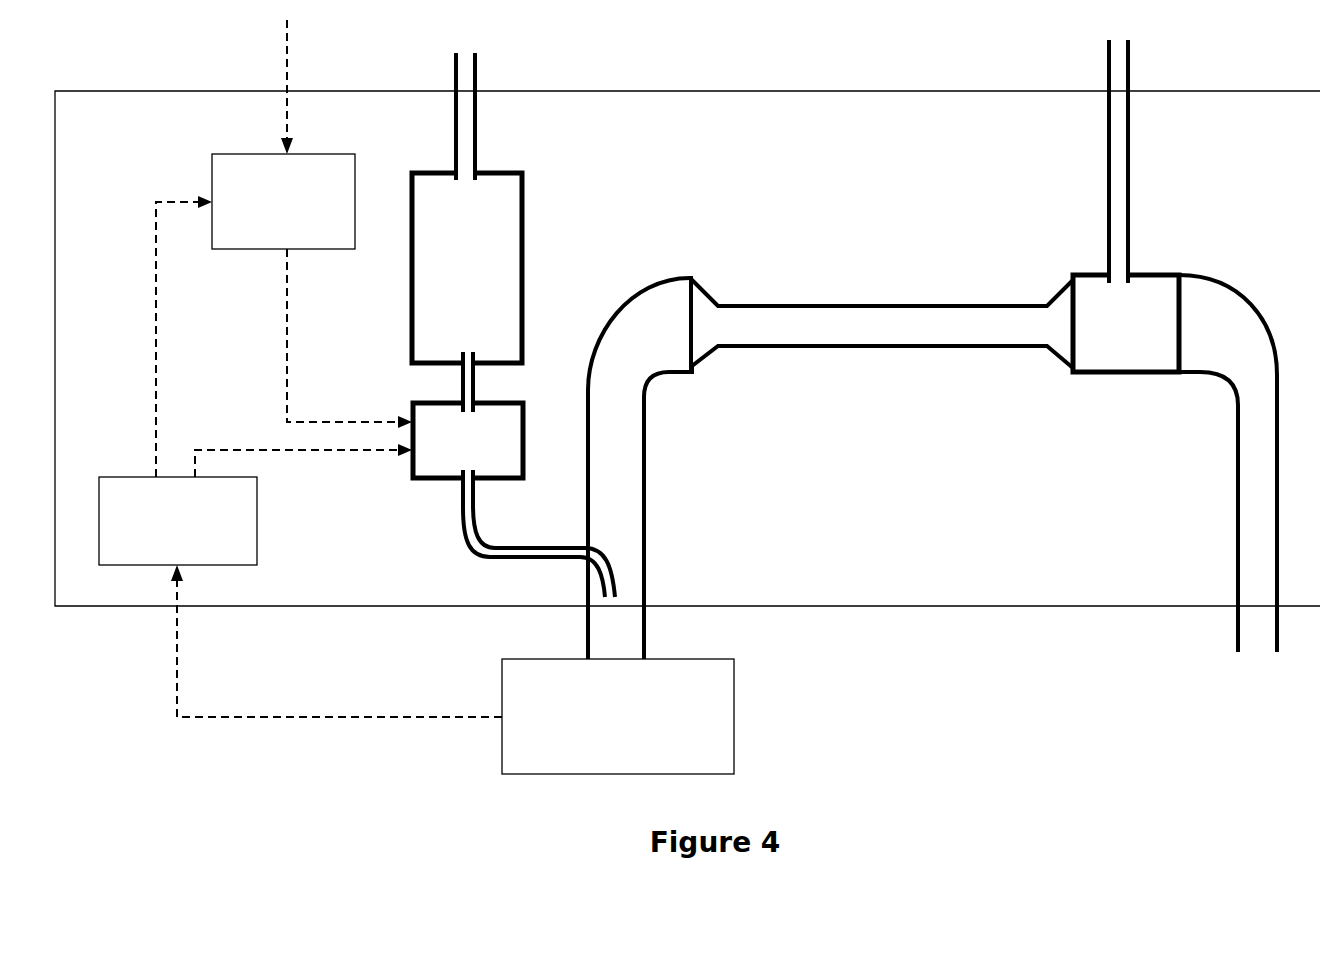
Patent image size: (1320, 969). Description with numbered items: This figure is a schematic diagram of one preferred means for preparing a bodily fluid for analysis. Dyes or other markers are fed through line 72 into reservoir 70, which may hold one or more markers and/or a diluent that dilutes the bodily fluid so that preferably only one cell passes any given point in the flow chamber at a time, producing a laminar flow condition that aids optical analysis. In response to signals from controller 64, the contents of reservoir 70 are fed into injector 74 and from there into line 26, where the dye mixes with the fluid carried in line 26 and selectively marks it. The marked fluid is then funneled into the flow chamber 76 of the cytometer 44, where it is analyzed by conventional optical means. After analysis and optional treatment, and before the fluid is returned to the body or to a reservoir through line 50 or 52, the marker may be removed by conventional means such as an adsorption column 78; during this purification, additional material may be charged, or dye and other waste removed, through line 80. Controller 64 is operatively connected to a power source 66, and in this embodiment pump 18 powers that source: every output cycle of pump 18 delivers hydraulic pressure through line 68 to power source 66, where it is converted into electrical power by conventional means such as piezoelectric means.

The pump 18 is at (734, 682).
The line 26 is at (645, 530).
The cytometer 44 is at (963, 607).
The line 50 is at (1200, 463).
The line 52 is at (1238, 437).
The controller 64 is at (212, 182).
The power source 66 is at (257, 518).
The line 68 is at (177, 697).
The reservoir 70 is at (522, 230).
The line 72 is at (477, 118).
The injector 74 is at (523, 402).
The flow chamber 76 is at (750, 306).
The adsorption column 78 is at (1153, 272).
The line 80 is at (1130, 188).